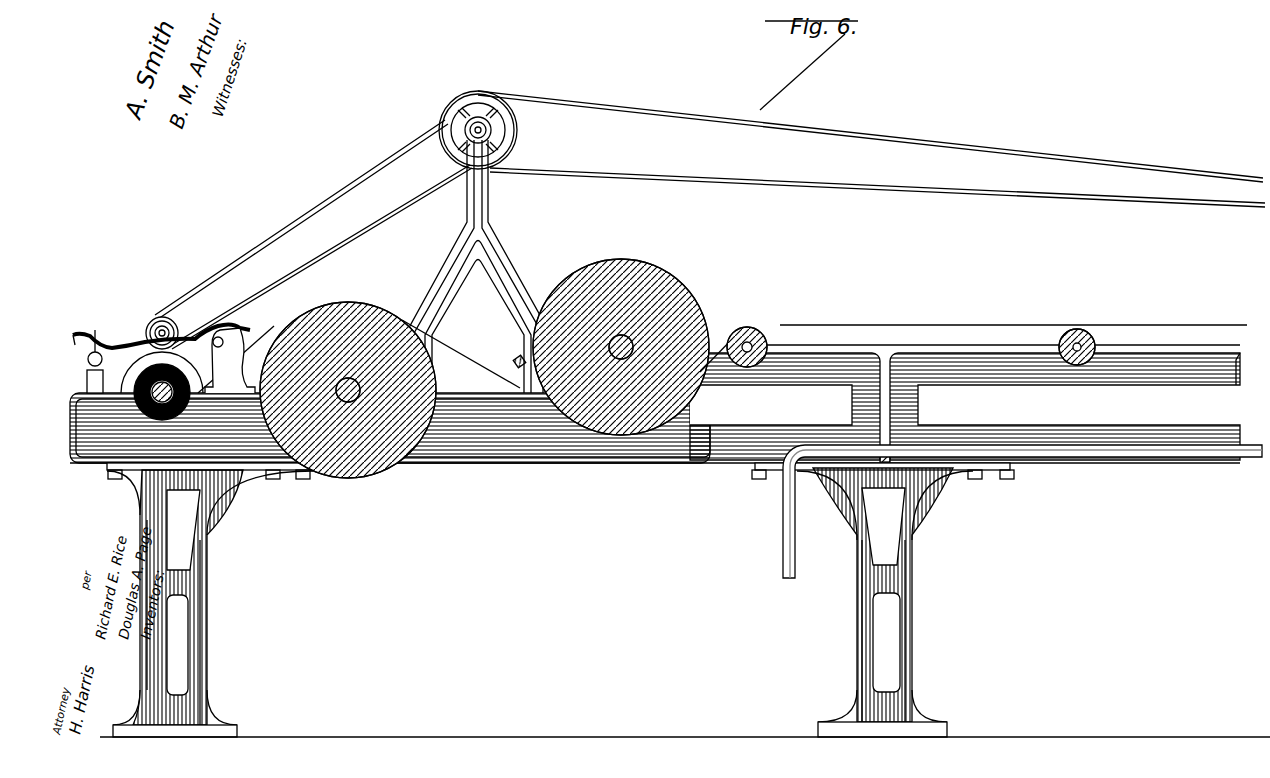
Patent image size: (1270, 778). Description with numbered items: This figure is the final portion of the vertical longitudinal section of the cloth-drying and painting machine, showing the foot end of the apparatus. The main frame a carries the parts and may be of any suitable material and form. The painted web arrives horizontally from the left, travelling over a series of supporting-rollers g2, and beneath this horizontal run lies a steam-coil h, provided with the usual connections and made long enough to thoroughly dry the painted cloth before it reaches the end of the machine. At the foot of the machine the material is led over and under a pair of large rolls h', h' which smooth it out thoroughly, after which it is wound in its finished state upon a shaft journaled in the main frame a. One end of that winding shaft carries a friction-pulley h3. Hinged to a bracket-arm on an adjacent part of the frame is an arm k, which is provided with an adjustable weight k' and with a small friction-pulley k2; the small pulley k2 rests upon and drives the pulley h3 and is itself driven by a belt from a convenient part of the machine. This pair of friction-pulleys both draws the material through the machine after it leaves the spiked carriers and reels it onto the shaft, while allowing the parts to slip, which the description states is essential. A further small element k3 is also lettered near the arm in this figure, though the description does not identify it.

The main frame a is at (670, 531).
The steam-coil h is at (1022, 492).
The large rolls h' is at (484, 367).
The friction-pulley h3 is at (230, 360).
The supporting-rollers g2 is at (752, 328).
The arm k is at (161, 330).
The adjustable weight k' is at (82, 361).
The small friction-pulley k2 is at (133, 388).
The small pulley k3 is at (162, 317).